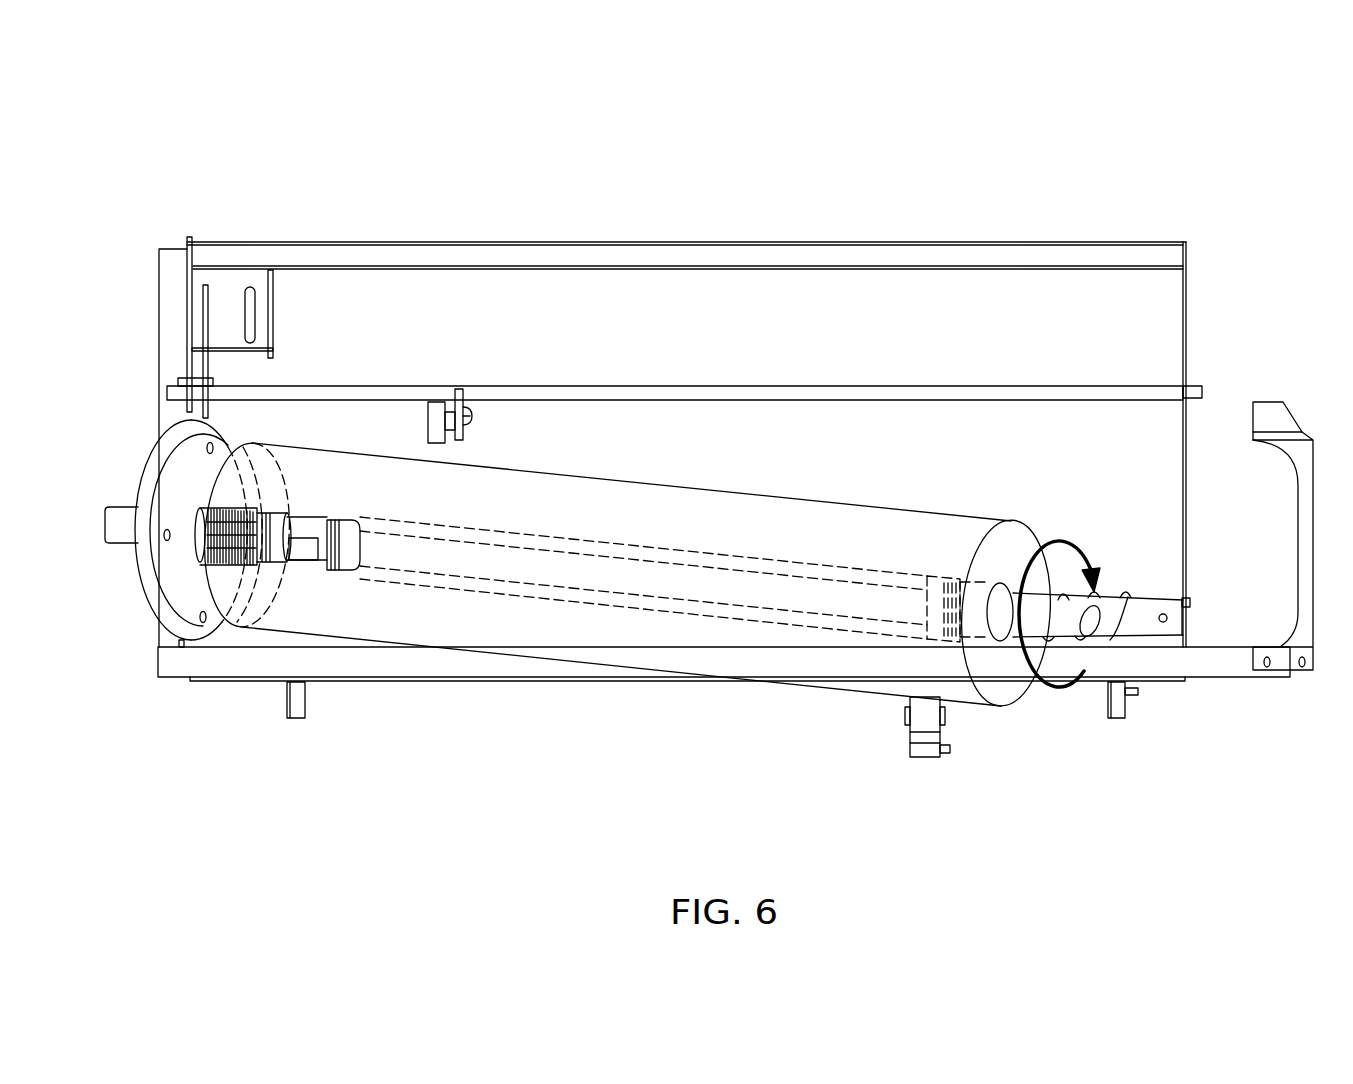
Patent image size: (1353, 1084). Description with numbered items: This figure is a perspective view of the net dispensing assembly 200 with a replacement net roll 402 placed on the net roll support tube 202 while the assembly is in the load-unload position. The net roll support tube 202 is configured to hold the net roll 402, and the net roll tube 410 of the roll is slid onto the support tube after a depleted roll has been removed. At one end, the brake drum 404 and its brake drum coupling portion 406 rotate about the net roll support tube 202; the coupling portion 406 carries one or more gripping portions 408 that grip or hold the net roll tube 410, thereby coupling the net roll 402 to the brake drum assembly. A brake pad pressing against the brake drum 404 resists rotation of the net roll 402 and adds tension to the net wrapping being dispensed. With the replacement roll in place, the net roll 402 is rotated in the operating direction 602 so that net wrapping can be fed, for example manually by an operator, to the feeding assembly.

The net dispensing assembly 200 is at (1210, 176).
The net roll support tube 202 is at (583, 573).
The net roll 402 is at (888, 507).
The brake drum 404 is at (187, 482).
The brake drum coupling portion 406 is at (312, 528).
The gripping portion 408 is at (283, 547).
The net roll tube 410 is at (723, 560).
The operating direction 602 is at (1063, 543).